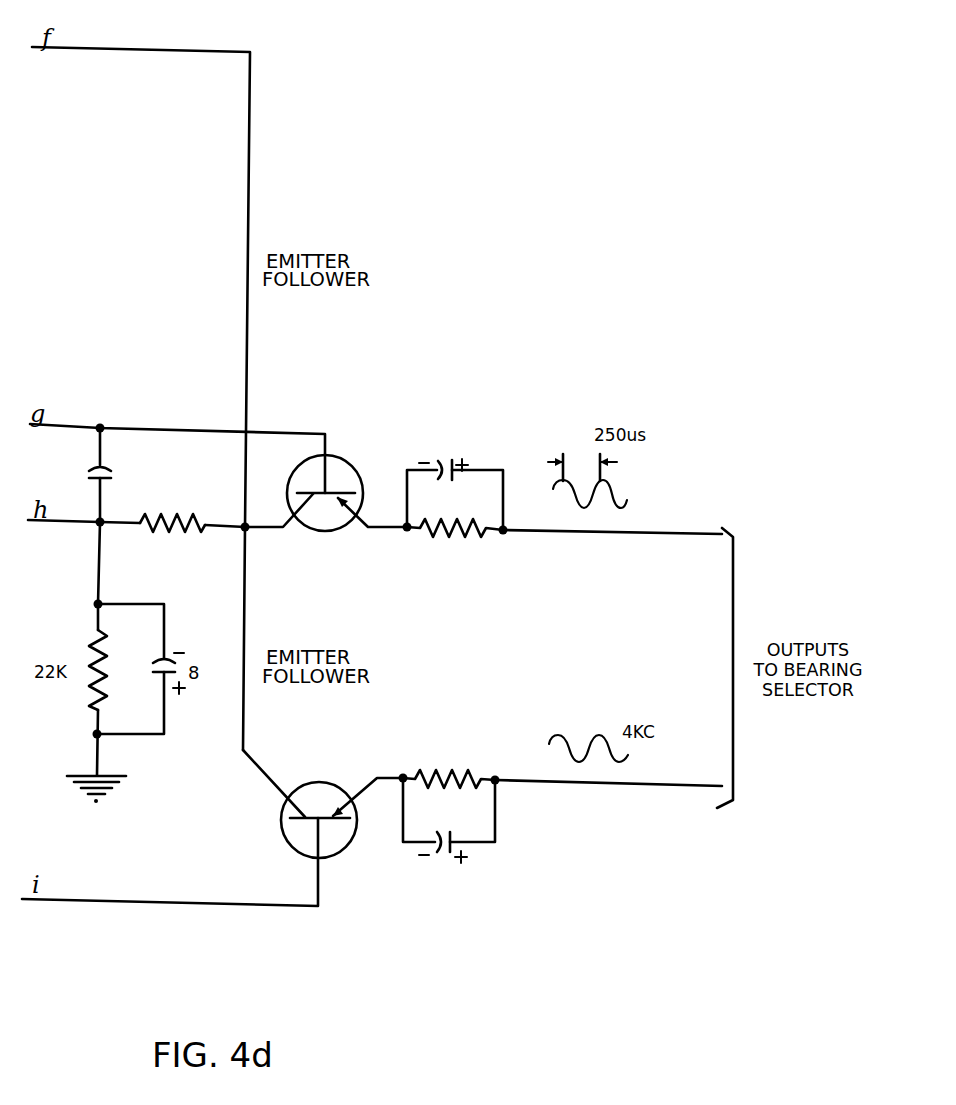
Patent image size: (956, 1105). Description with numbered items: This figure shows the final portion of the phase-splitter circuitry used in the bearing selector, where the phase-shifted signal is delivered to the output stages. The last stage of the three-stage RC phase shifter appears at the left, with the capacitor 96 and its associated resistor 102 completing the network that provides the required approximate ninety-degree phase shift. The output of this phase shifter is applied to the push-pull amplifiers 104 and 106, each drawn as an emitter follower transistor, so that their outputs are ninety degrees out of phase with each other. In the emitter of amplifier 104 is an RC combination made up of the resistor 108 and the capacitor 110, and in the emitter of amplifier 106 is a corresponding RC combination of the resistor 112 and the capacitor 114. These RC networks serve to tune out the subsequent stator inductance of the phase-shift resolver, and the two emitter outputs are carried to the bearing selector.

The capacitor 96 is at (108, 464).
The resistor 102 is at (175, 533).
The push-pull amplifier 104 is at (322, 533).
The push-pull amplifier 106 is at (316, 782).
The resistor of RC combination 108 is at (432, 540).
The capacitor of RC combination 110 is at (455, 476).
The resistor of RC combination 112 is at (466, 776).
The capacitor of RC combination 114 is at (449, 836).